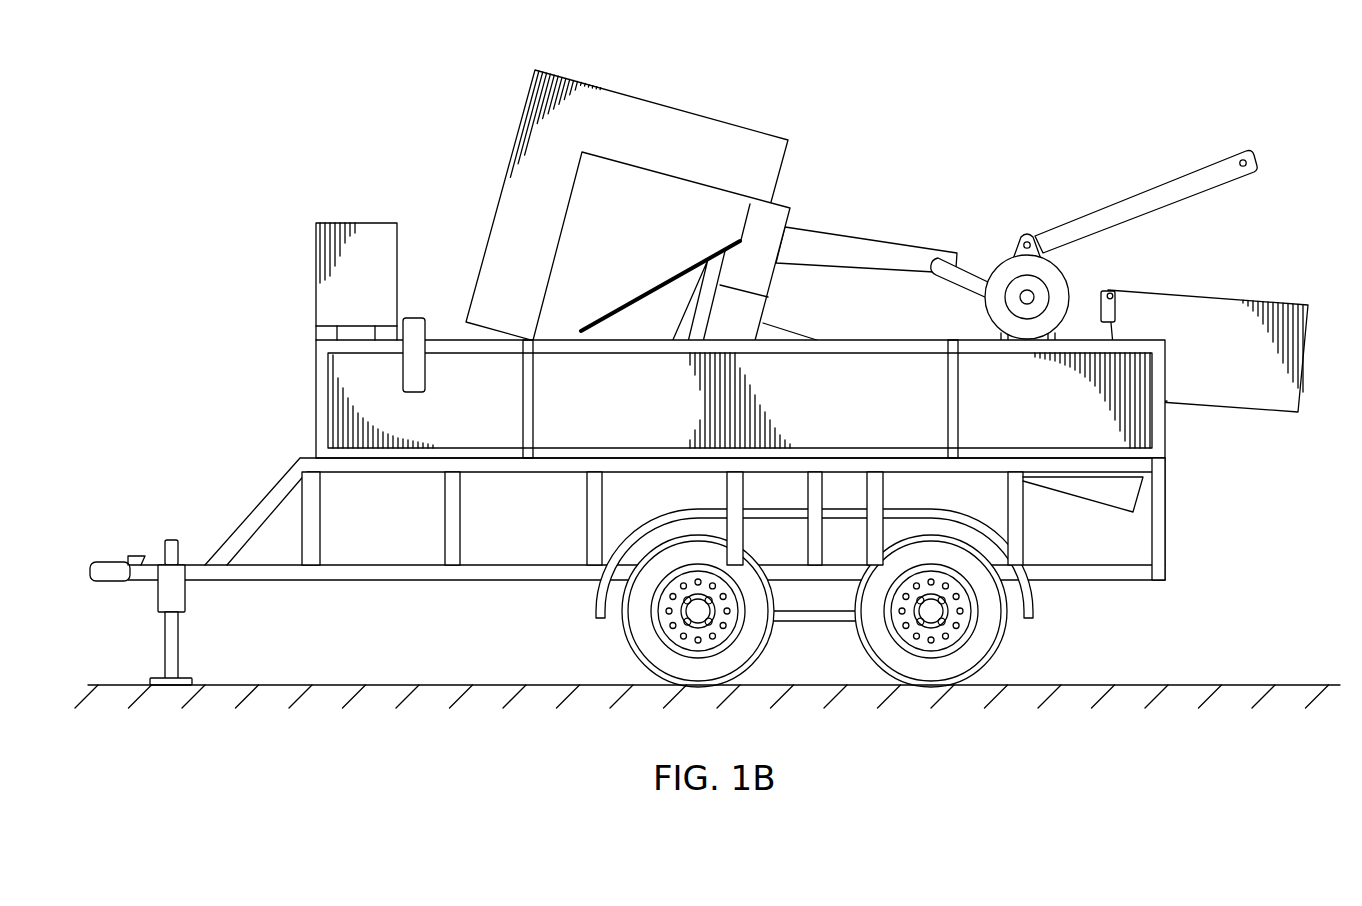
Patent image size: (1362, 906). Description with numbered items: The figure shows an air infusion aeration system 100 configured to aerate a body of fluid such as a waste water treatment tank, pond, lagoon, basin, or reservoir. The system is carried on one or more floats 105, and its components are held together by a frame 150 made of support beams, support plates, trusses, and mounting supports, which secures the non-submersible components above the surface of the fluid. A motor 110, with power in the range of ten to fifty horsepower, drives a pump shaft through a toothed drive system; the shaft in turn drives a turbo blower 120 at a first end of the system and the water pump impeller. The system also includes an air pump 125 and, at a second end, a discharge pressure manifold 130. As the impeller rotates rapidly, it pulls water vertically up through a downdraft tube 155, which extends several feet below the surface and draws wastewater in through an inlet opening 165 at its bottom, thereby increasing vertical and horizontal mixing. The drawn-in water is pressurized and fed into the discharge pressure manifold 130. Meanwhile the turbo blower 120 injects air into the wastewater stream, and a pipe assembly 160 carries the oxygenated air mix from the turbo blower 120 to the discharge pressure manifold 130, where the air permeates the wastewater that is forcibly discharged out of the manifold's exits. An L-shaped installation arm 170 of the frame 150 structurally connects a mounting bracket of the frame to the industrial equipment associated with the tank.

The air infusion aeration system 100 is at (273, 90).
The float 105 is at (1167, 423).
The motor 110 is at (522, 118).
The turbo blower 120 is at (773, 280).
The air pump 125 is at (658, 302).
The discharge pressure manifold 130 is at (1072, 285).
The frame 150 is at (427, 373).
The downdraft tube 155 is at (1213, 298).
The pipe assembly 160 is at (855, 237).
The inlet opening 165 is at (1315, 388).
The installation arm 170 is at (1140, 192).